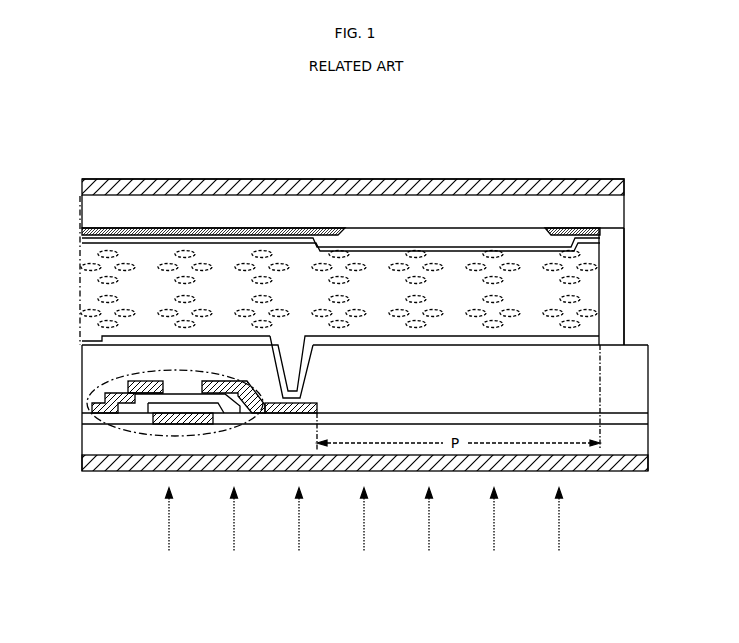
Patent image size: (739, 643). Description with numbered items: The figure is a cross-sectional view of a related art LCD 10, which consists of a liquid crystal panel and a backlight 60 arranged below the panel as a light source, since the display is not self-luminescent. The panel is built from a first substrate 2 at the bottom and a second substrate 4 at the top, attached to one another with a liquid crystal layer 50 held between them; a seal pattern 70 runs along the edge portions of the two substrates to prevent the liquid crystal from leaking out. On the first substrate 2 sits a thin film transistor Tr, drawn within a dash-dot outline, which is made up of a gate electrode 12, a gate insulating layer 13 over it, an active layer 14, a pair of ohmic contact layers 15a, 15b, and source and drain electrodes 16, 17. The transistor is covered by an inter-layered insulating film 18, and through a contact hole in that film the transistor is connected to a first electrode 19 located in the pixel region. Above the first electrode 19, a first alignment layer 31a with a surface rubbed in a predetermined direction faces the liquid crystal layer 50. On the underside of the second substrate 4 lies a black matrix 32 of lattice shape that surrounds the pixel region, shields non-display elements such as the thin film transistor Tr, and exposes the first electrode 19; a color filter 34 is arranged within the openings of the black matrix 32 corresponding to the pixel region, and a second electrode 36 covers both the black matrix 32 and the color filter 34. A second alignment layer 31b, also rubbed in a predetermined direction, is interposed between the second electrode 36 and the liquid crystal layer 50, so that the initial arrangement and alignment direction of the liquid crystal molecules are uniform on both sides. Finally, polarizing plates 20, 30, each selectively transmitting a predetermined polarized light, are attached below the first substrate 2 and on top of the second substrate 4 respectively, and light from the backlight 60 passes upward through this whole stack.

The LCD 10 is at (566, 158).
The polarizing plate 30 is at (462, 178).
The second substrate 4 is at (610, 213).
The color filter 34 is at (386, 235).
The black matrix 32 is at (82, 230).
The second electrode 36 is at (82, 241).
The second alignment layer 31b is at (590, 246).
The seal pattern 70 is at (613, 287).
The liquid crystal layer 50 is at (90, 288).
The first alignment layer 31a is at (600, 323).
The first electrode 19 is at (432, 346).
The inter-layered insulating film 18 is at (92, 377).
The source electrode 16 is at (128, 380).
The ohmic contact layer 15a is at (158, 380).
The ohmic contact layer 15b is at (205, 380).
The active layer 14 is at (128, 405).
The gate electrode 12 is at (180, 421).
The gate insulating layer 13 is at (230, 419).
The drain electrode 17 is at (283, 413).
The first substrate 2 is at (637, 438).
The polarizing plate 20 is at (640, 462).
The backlight 60 is at (364, 533).
The thin film transistor Tr is at (137, 435).